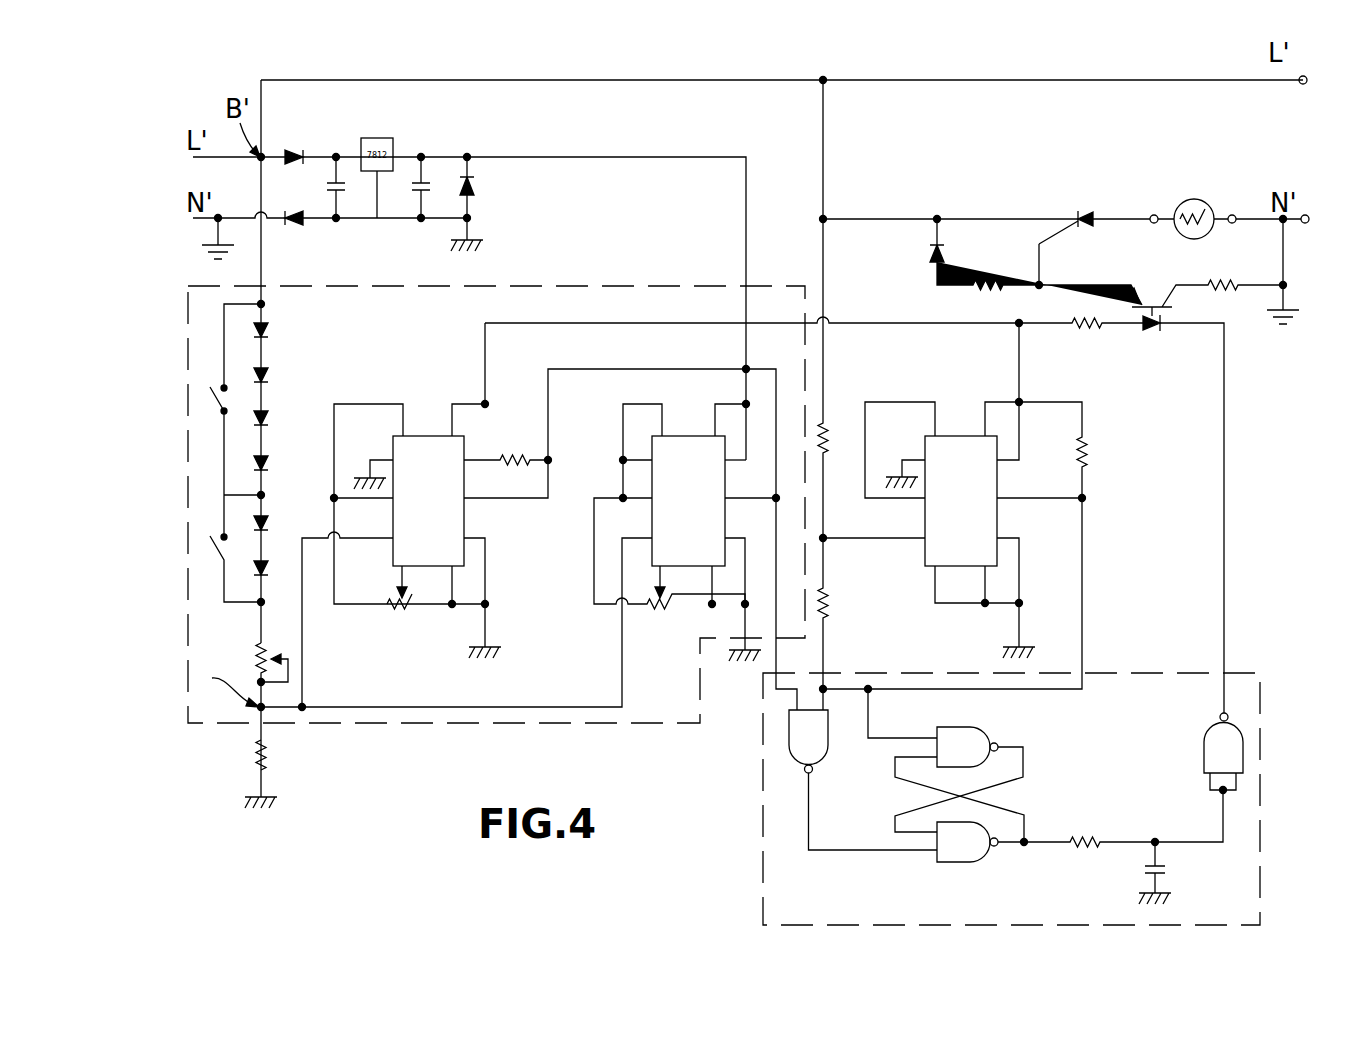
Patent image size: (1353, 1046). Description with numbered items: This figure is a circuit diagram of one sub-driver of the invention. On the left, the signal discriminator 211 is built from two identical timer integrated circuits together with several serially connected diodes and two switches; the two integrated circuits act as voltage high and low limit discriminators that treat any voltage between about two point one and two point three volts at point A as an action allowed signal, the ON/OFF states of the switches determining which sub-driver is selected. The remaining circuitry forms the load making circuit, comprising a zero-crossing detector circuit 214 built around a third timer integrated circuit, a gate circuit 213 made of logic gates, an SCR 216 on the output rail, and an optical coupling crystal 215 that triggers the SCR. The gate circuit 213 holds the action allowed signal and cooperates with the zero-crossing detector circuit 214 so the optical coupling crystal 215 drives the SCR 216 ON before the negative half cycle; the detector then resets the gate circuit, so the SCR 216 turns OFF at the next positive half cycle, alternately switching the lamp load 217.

The signal discriminator 211 is at (565, 285).
The gate circuit 213 is at (1237, 673).
The zero-crossing detector circuit 214 is at (953, 436).
The optical coupling crystal 215 is at (1148, 332).
The SCR 216 is at (1087, 208).
The lamp 217 is at (1206, 200).